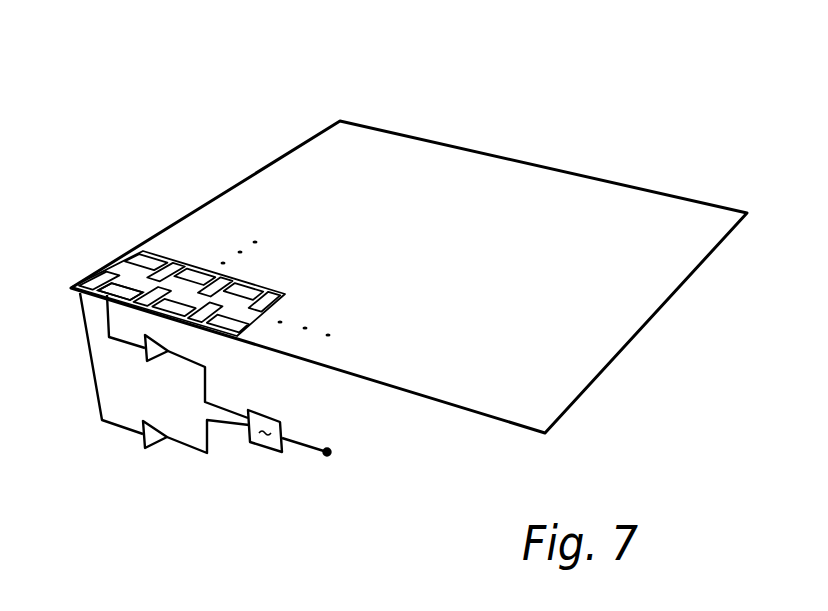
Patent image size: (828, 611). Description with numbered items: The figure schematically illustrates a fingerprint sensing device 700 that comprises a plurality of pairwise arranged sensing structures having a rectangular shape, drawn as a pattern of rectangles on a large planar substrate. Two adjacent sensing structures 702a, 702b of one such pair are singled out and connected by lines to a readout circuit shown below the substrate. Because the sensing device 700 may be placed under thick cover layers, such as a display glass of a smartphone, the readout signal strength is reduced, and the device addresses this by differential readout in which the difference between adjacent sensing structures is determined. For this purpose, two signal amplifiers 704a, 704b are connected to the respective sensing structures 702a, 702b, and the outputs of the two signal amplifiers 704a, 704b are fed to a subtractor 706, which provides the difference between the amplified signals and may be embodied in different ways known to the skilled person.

The sensing device 700 is at (438, 97).
The sensing structure 702a is at (98, 280).
The sensing structure 702b is at (118, 287).
The signal amplifier 704a is at (158, 362).
The signal amplifier 704b is at (155, 449).
The subtractor 706 is at (257, 449).